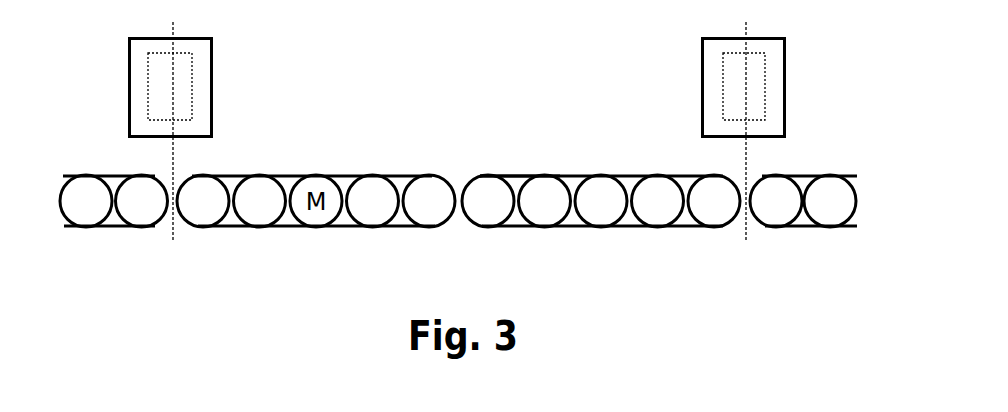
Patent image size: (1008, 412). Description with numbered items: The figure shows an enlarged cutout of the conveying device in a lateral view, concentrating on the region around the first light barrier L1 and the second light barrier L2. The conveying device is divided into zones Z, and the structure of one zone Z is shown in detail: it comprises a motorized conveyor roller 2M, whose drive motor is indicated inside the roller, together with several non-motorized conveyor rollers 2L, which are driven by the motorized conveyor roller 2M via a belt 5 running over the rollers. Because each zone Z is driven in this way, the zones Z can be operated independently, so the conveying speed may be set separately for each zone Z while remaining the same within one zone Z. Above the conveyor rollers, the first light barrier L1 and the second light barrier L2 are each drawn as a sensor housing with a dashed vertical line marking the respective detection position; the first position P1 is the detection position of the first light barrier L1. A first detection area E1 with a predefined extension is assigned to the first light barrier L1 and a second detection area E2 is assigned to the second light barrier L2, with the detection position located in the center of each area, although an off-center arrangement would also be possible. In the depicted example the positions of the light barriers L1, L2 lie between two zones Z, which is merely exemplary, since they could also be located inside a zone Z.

The first light barrier L1 is at (712, 70).
The second light barrier L2 is at (138, 70).
The first detection area E1 is at (755, 100).
The second detection area E2 is at (183, 100).
The first position P1 is at (456, 146).
The non-motorized conveyor roller 2L is at (483, 183).
The motorized conveyor roller 2M is at (602, 178).
The belt 5 is at (515, 177).
The zone Z is at (610, 224).